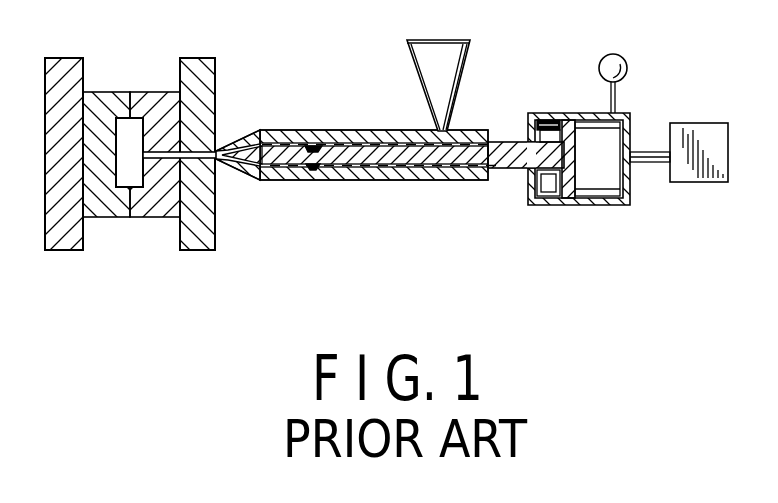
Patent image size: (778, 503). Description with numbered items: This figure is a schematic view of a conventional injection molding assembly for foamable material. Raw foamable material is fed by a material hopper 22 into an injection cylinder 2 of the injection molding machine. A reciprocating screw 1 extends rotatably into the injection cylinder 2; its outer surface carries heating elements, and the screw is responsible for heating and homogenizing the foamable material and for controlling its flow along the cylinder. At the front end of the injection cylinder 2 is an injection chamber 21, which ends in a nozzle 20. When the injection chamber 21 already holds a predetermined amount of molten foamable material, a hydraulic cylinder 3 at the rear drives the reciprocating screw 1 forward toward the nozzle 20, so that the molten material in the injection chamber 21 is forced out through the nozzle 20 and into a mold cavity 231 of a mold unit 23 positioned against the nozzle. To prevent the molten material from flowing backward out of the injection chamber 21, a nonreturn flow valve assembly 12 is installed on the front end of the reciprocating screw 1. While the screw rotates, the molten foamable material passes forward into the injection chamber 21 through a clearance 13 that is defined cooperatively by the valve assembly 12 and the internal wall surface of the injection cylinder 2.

The reciprocating screw 1 is at (506, 130).
The injection cylinder 2 is at (312, 130).
The hydraulic cylinder 3 is at (697, 123).
The nonreturn flow valve assembly 12 is at (318, 168).
The clearance 13 is at (312, 166).
The nozzle 20 is at (240, 146).
The injection chamber 21 is at (254, 161).
The material hopper 22 is at (458, 75).
The mold unit 23 is at (131, 143).
The mold cavity 231 is at (123, 182).